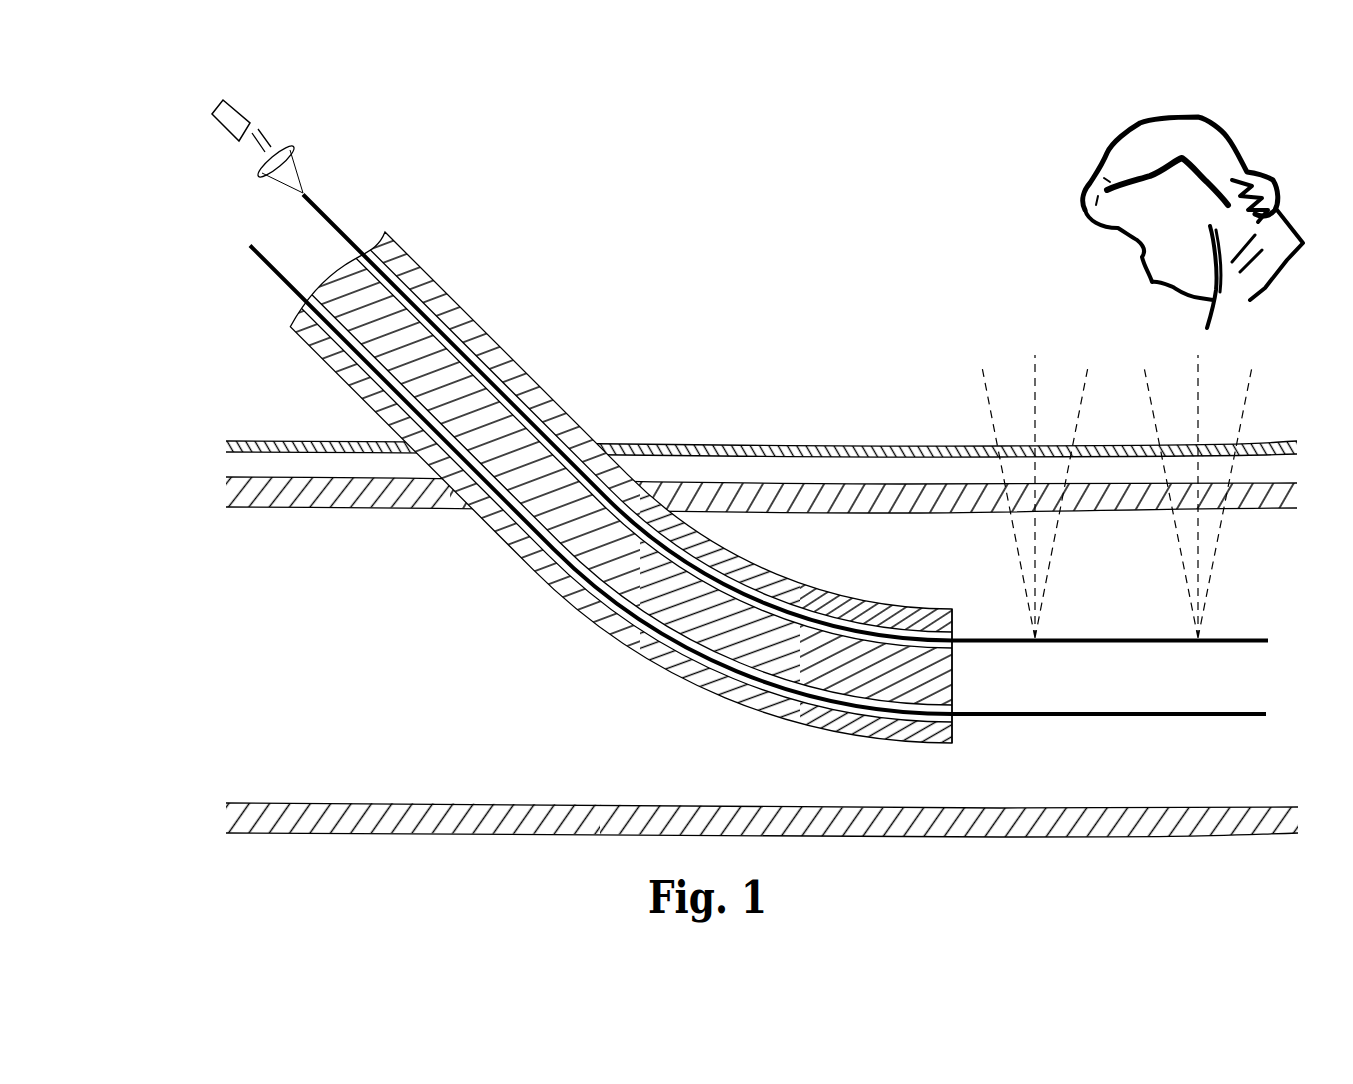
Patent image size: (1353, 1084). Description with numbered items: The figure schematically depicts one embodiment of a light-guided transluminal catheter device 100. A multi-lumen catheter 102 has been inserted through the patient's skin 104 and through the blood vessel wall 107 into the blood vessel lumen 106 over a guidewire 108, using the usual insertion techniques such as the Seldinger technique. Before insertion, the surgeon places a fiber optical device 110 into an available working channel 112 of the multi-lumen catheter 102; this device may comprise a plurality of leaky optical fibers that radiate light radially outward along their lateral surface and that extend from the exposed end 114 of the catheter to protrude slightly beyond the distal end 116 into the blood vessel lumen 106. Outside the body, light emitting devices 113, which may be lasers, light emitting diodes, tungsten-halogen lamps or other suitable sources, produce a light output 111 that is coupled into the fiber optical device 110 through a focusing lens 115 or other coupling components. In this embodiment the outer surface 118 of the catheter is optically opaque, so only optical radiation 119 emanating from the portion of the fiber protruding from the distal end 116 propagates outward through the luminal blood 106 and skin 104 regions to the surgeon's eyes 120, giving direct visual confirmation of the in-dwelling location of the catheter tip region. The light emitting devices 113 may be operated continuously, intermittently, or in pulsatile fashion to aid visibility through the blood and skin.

The light-guided transluminal catheter device 100 is at (132, 234).
The multi-lumen catheter 102 is at (384, 231).
The skin 104 is at (283, 438).
The blood vessel lumen 106 is at (356, 653).
The blood vessel wall 107 is at (310, 818).
The guidewire 108 is at (1090, 733).
The fiber optical device 110 is at (483, 367).
The light output 111 is at (264, 143).
The working channel 112 is at (362, 254).
The light emitting devices 113 is at (226, 125).
The exposed end 114 is at (343, 287).
The focusing lens 115 is at (288, 150).
The distal end 116 is at (957, 737).
The outer surface 118 is at (685, 535).
The optical radiation 119 is at (1020, 571).
The surgeon's eyes 120 is at (1123, 235).